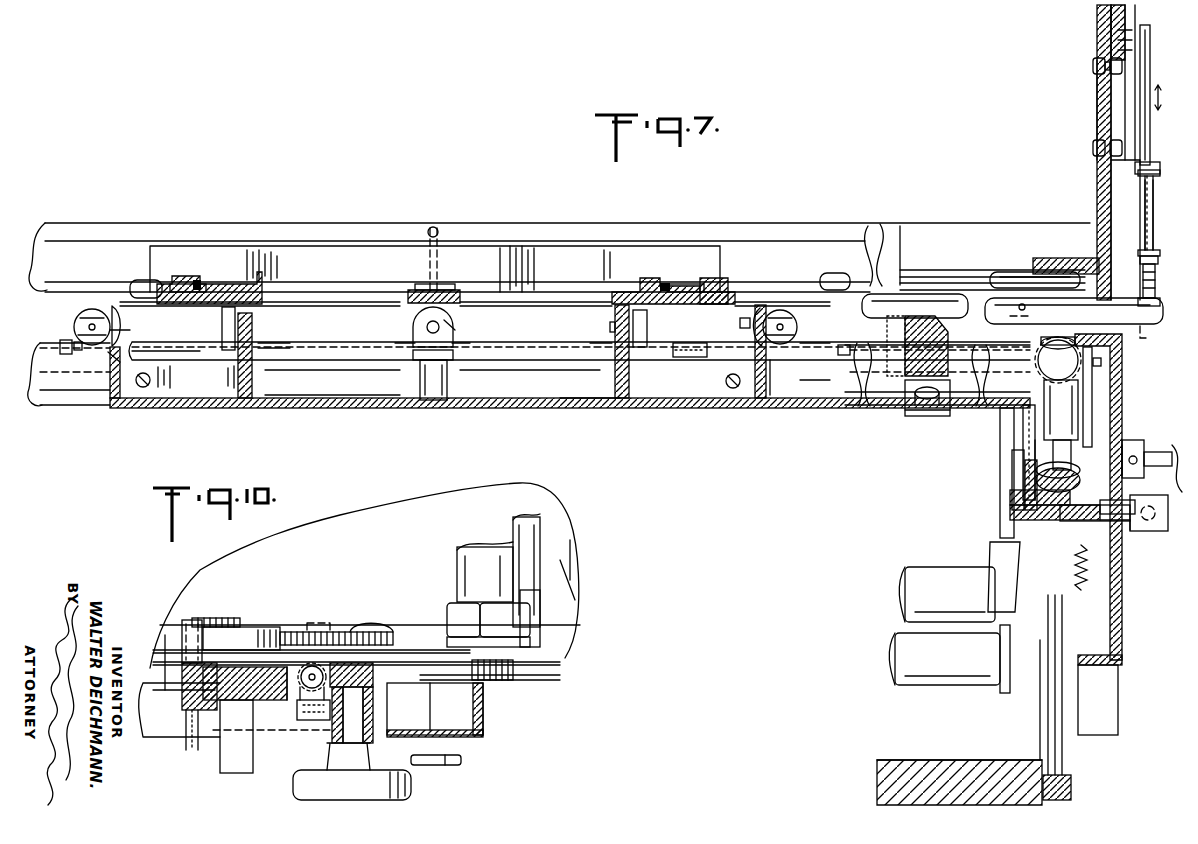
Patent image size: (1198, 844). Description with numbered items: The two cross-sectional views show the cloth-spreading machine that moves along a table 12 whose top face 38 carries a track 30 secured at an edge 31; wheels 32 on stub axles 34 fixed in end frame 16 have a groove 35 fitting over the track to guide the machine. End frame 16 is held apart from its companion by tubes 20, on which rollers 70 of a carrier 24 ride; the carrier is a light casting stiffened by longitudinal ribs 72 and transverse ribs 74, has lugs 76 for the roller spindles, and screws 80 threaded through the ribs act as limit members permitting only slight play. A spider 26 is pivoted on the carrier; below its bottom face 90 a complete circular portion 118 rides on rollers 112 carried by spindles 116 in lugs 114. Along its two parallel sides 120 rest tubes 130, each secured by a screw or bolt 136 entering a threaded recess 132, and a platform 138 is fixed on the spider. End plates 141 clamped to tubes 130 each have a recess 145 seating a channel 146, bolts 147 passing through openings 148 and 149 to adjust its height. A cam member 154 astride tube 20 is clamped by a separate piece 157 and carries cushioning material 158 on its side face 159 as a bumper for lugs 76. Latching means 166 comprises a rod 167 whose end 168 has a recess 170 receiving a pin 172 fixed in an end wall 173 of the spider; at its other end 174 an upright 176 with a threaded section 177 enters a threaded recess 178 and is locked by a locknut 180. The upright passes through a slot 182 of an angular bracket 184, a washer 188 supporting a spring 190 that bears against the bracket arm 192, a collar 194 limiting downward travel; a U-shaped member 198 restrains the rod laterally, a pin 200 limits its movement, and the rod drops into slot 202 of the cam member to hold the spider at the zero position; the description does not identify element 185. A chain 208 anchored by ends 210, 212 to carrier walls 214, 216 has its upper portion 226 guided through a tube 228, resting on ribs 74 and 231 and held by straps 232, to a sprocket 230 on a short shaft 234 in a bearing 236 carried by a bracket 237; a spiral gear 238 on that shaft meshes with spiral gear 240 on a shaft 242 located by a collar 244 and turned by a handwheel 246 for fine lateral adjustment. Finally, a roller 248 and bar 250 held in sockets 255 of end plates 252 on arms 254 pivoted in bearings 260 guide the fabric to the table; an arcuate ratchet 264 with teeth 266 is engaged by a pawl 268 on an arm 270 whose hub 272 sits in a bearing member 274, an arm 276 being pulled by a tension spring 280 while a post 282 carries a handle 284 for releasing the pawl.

In FIG. 7, the table 12 is at (880, 772).
In FIG. 10, the table 12 is at (580, 575).
In FIG. 7, the end frame 16 is at (1125, 395).
In FIG. 10, the end frame 16 is at (485, 722).
In FIG. 7, the tube 20 is at (40, 405).
In FIG. 10, the tube 20 is at (542, 540).
In FIG. 7, the carrier 24 is at (300, 410).
In FIG. 7, the spider 26 is at (258, 280).
In FIG. 7, the track 30 is at (1072, 785).
In FIG. 10, the track 30 is at (545, 655).
In FIG. 7, the edge 31 is at (1048, 760).
In FIG. 7, the wheels 32 is at (1082, 700).
In FIG. 10, the wheels 32 is at (435, 710).
In FIG. 7, the stub axles 34 is at (1040, 690).
In FIG. 10, the stub axles 34 is at (430, 660).
In FIG. 7, the groove 35 is at (1064, 600).
In FIG. 10, the groove 35 is at (514, 672).
In FIG. 7, the top face 38 is at (940, 760).
In FIG. 10, the top face 38 is at (565, 605).
In FIG. 7, the rollers 70 is at (90, 308).
In FIG. 7, the longitudinal ribs 72 is at (265, 405).
In FIG. 7, the transverse ribs 74 is at (120, 405).
In FIG. 7, the lugs 76 is at (118, 310).
In FIG. 7, the screws 80 is at (145, 388).
In FIG. 7, the bottom face 90 is at (312, 310).
In FIG. 7, the rollers 112 is at (222, 320).
In FIG. 7, the lugs 114 is at (260, 348).
In FIG. 7, the spindles 116 is at (260, 340).
In FIG. 7, the complete circular portion 118 is at (628, 290).
In FIG. 7, the parallel sides 120 is at (515, 250).
In FIG. 7, the tubes 130 is at (58, 226).
In FIG. 10, the tubes 130 is at (468, 548).
In FIG. 7, the threaded recesses 132 is at (455, 290).
In FIG. 7, the screw or bolt 136 is at (437, 226).
In FIG. 7, the platform 138 is at (1010, 270).
In FIG. 7, the end plates 141 is at (1097, 172).
In FIG. 7, the trough or recess 145 is at (1097, 192).
In FIG. 7, the channel 146 is at (1097, 22).
In FIG. 7, the bolts 147 is at (1093, 66).
In FIG. 7, the openings 148 is at (1105, 72).
In FIG. 7, the openings 149 is at (1100, 50).
In FIG. 7, the cam member 154 is at (905, 410).
In FIG. 7, the separate piece 157 is at (915, 414).
In FIG. 7, the cushioning material 158 is at (887, 330).
In FIG. 7, the side face 159 is at (905, 345).
In FIG. 7, the latching means 166 is at (1155, 162).
In FIG. 7, the rod 167 is at (140, 282).
In FIG. 7, the end 168 is at (168, 283).
In FIG. 7, the recess 170 is at (185, 283).
In FIG. 7, the pin 172 is at (198, 280).
In FIG. 7, the end wall 173 is at (740, 320).
In FIG. 7, the end 174 is at (1163, 322).
In FIG. 7, the upright 176 is at (1158, 261).
In FIG. 7, the threaded section 177 is at (1156, 278).
In FIG. 7, the threaded recess 178 is at (1152, 338).
In FIG. 7, the locknut 180 is at (1160, 300).
In FIG. 7, the slot 182 is at (1110, 176).
In FIG. 7, the angular bracket 184 is at (1157, 200).
In FIG. 7, the flange 185 is at (1160, 253).
In FIG. 7, the washer 188 is at (1157, 235).
In FIG. 7, the spring 190 is at (1157, 215).
In FIG. 7, the arm 192 is at (1160, 172).
In FIG. 7, the collar 194 is at (1150, 160).
In FIG. 7, the U-shaped member 198 is at (1060, 259).
In FIG. 7, the pin 200 is at (1026, 310).
In FIG. 7, the slot 202 is at (912, 296).
In FIG. 7, the chain 208 is at (80, 352).
In FIG. 7, the end 210 is at (775, 382).
In FIG. 7, the end 212 is at (120, 332).
In FIG. 7, the wall 214 is at (805, 400).
In FIG. 7, the wall 216 is at (112, 365).
In FIG. 7, the upper portion 226 is at (55, 336).
In FIG. 7, the tube 228 is at (192, 362).
In FIG. 7, the sprocket 230 is at (1040, 352).
In FIG. 7, the ribs 231 is at (350, 372).
In FIG. 7, the straps 232 is at (436, 402).
In FIG. 7, the short shaft 234 is at (1066, 430).
In FIG. 10, the short shaft 234 is at (300, 690).
In FIG. 7, the bearing 236 is at (1093, 372).
In FIG. 7, the bracket 237 is at (1102, 362).
In FIG. 7, the spiral gear 238 is at (1036, 476).
In FIG. 10, the spiral gear 238 is at (303, 663).
In FIG. 10, the spiral gear 240 is at (355, 630).
In FIG. 7, the short shaft 242 is at (1150, 452).
In FIG. 10, the short shaft 242 is at (374, 712).
In FIG. 7, the collar 244 is at (1128, 440).
In FIG. 10, the collar 244 is at (358, 772).
In FIG. 7, the handwheel 246 is at (1168, 512).
In FIG. 10, the handwheel 246 is at (410, 784).
In FIG. 7, the roller 248 is at (900, 663).
In FIG. 7, the bar 250 is at (928, 572).
In FIG. 7, the end plates 252 is at (1005, 600).
In FIG. 10, the end plates 252 is at (542, 628).
In FIG. 7, the arm 254 is at (1025, 480).
In FIG. 7, the sockets 255 is at (1008, 693).
In FIG. 10, the bearing 260 is at (315, 663).
In FIG. 7, the arcuate ratchet 264 is at (1023, 425).
In FIG. 10, the arcuate ratchet 264 is at (365, 630).
In FIG. 7, the teeth 266 is at (1033, 440).
In FIG. 10, the teeth 266 is at (288, 665).
In FIG. 7, the pawl 268 is at (1012, 497).
In FIG. 10, the pawl 268 is at (205, 618).
In FIG. 7, the arm 270 is at (1015, 460).
In FIG. 10, the arm 270 is at (232, 618).
In FIG. 7, the hub 272 is at (1003, 525).
In FIG. 10, the hub 272 is at (182, 640).
In FIG. 7, the bearing member 274 is at (1130, 530).
In FIG. 10, the bearing member 274 is at (190, 750).
In FIG. 7, the arm 276 is at (1012, 512).
In FIG. 10, the arm 276 is at (250, 666).
In FIG. 7, the tension spring 280 is at (1076, 575).
In FIG. 7, the post 282 is at (1135, 520).
In FIG. 10, the post 282 is at (222, 768).
In FIG. 7, the handle 284 is at (1128, 505).
In FIG. 10, the handle 284 is at (463, 760).